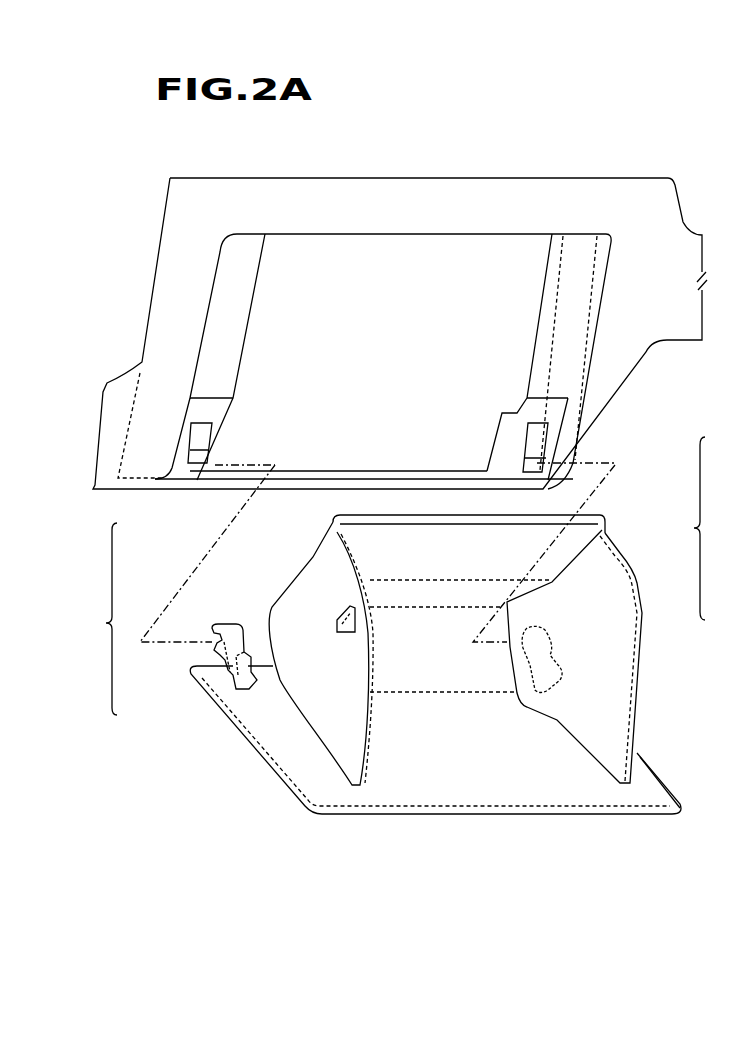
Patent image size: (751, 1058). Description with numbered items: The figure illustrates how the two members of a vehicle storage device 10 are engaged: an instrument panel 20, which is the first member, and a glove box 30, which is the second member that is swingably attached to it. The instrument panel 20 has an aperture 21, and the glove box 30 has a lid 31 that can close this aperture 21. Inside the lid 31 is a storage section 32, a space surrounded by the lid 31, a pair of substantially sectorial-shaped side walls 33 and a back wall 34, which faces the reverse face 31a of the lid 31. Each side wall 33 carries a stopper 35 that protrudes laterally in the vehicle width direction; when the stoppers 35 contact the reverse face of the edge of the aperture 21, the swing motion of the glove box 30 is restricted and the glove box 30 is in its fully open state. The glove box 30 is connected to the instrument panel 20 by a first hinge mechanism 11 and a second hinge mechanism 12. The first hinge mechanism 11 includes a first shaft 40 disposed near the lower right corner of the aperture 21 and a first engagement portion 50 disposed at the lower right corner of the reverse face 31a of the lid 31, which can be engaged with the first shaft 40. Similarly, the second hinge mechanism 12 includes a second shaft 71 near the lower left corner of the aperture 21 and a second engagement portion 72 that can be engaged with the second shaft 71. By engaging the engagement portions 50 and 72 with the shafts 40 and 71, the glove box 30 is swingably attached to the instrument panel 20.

The vehicle storage device 10 is at (499, 88).
The instrument panel 20 is at (570, 198).
The aperture 21 is at (353, 236).
The second shaft 71 is at (195, 462).
The first shaft 40 is at (527, 465).
The first hinge mechanism 11 is at (719, 528).
The second hinge mechanism 12 is at (94, 619).
The glove box 30 is at (514, 838).
The lid 31 is at (417, 815).
The reverse face of the lid 31a is at (648, 793).
The storage section 32 is at (450, 672).
The side wall 33 is at (330, 727).
The back wall 34 is at (410, 540).
The stopper 35 is at (347, 632).
The first engagement portion 50 is at (550, 633).
The second engagement portion 72 is at (213, 652).